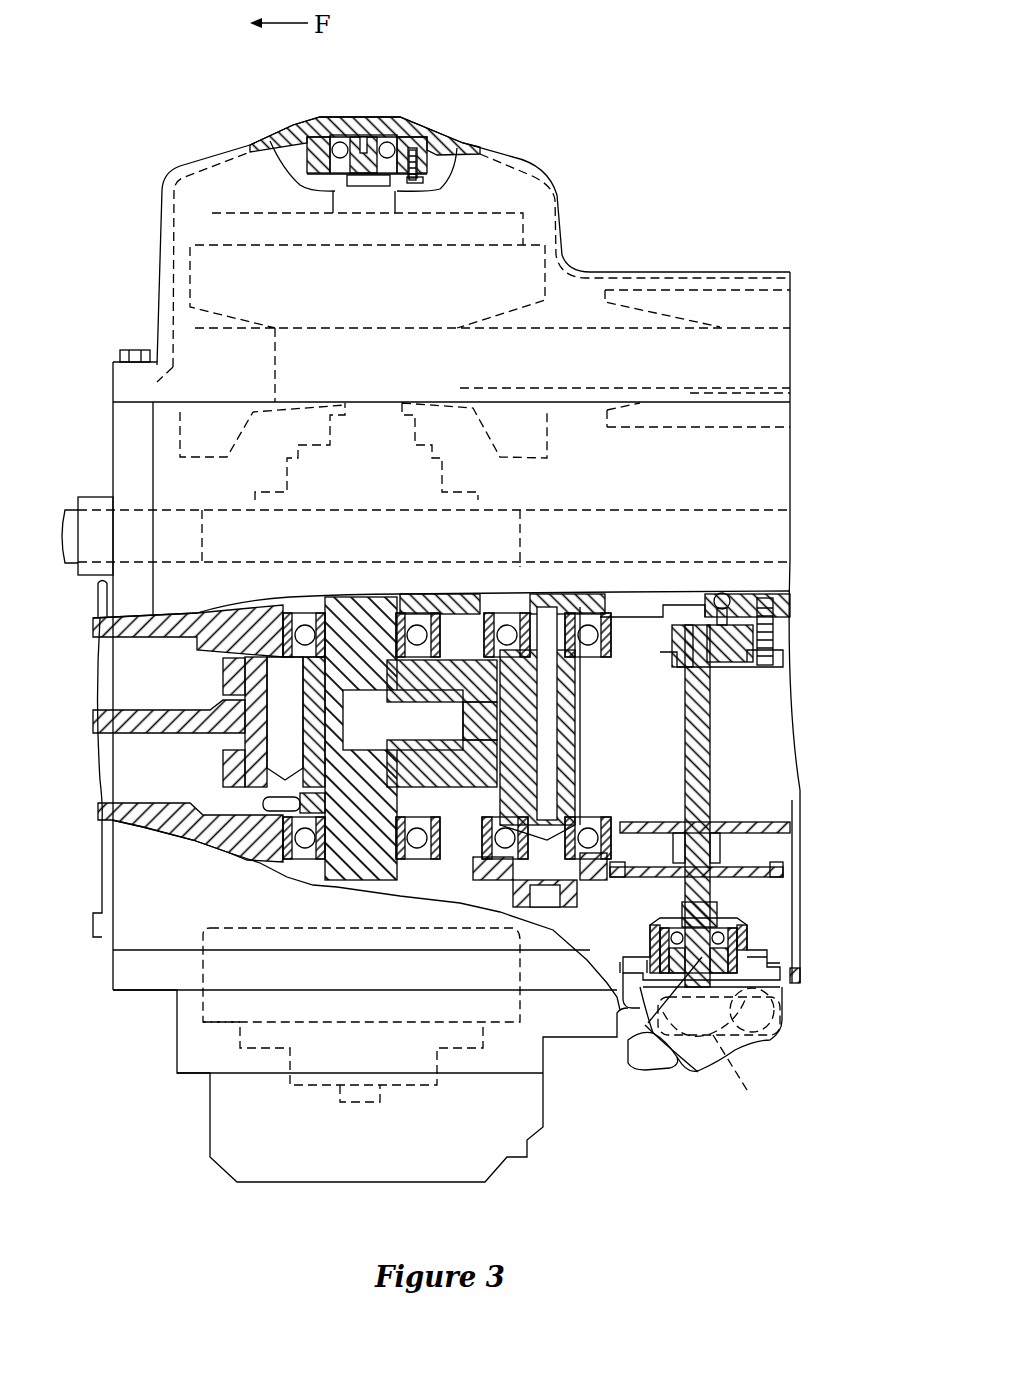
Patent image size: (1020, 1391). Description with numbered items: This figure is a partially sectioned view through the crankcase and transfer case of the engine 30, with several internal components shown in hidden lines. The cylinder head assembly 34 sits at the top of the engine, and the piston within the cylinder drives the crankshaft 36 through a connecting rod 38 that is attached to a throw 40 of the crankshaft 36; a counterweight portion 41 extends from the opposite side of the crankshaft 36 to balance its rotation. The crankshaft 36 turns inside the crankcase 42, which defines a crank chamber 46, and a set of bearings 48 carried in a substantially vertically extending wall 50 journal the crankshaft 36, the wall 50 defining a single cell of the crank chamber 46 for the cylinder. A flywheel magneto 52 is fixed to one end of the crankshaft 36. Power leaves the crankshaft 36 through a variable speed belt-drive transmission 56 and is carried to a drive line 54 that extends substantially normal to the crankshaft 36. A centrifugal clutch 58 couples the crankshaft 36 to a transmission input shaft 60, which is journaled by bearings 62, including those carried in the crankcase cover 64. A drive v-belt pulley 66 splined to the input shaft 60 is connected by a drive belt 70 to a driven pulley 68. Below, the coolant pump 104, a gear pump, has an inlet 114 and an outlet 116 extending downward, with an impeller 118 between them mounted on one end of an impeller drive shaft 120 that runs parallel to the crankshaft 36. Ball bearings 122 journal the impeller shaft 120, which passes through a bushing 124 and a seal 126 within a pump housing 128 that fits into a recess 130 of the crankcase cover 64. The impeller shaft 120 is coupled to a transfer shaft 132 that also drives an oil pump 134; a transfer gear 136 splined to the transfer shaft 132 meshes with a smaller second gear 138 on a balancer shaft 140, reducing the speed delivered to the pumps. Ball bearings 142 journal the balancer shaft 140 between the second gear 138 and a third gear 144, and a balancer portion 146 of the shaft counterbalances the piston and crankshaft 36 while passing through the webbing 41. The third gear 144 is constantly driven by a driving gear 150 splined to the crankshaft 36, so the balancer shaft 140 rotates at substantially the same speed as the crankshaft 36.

The engine 30 is at (728, 262).
The cylinder head assembly 34 is at (350, 920).
The crankshaft 36 is at (368, 580).
The connecting rod 38 is at (118, 722).
The throw 40 is at (228, 684).
The counterweight portion 41 is at (520, 770).
The crankcase 42 is at (762, 450).
The crank chamber 46 is at (392, 731).
The bearings 48 is at (283, 614).
The vertically extending wall 50 is at (650, 606).
The flywheel magneto 52 is at (218, 1038).
The drive line 54 is at (705, 505).
The variable speed belt-drive transmission 56 is at (140, 264).
The centrifugal clutch 58 is at (210, 500).
The transmission input shaft 60 is at (358, 150).
The bearings 62 is at (318, 142).
The crankcase cover 64 is at (513, 157).
The drive v-belt pulley 66 is at (183, 215).
The driven pulley 68 is at (603, 300).
The drive belt 70 is at (275, 350).
The coolant pump 104 is at (696, 1082).
The inlet 114 is at (767, 1005).
The outlet 116 is at (643, 1060).
The impeller 118 is at (748, 1078).
The impeller drive shaft 120 is at (632, 1040).
The ball bearings 122 is at (762, 920).
The bushing 124 is at (770, 957).
The seal 126 is at (762, 935).
The pump housing 128 is at (773, 1038).
The recess 130 is at (797, 972).
The transfer shaft 132 is at (712, 890).
The oil pump 134 is at (776, 675).
The transfer gear 136 is at (760, 862).
The second gear 138 is at (578, 892).
The balancer shaft 140 is at (625, 715).
The ball bearings 142 is at (595, 646).
The third gear 144 is at (645, 787).
The balancer portion 146 is at (466, 705).
The driving gear 150 is at (262, 803).